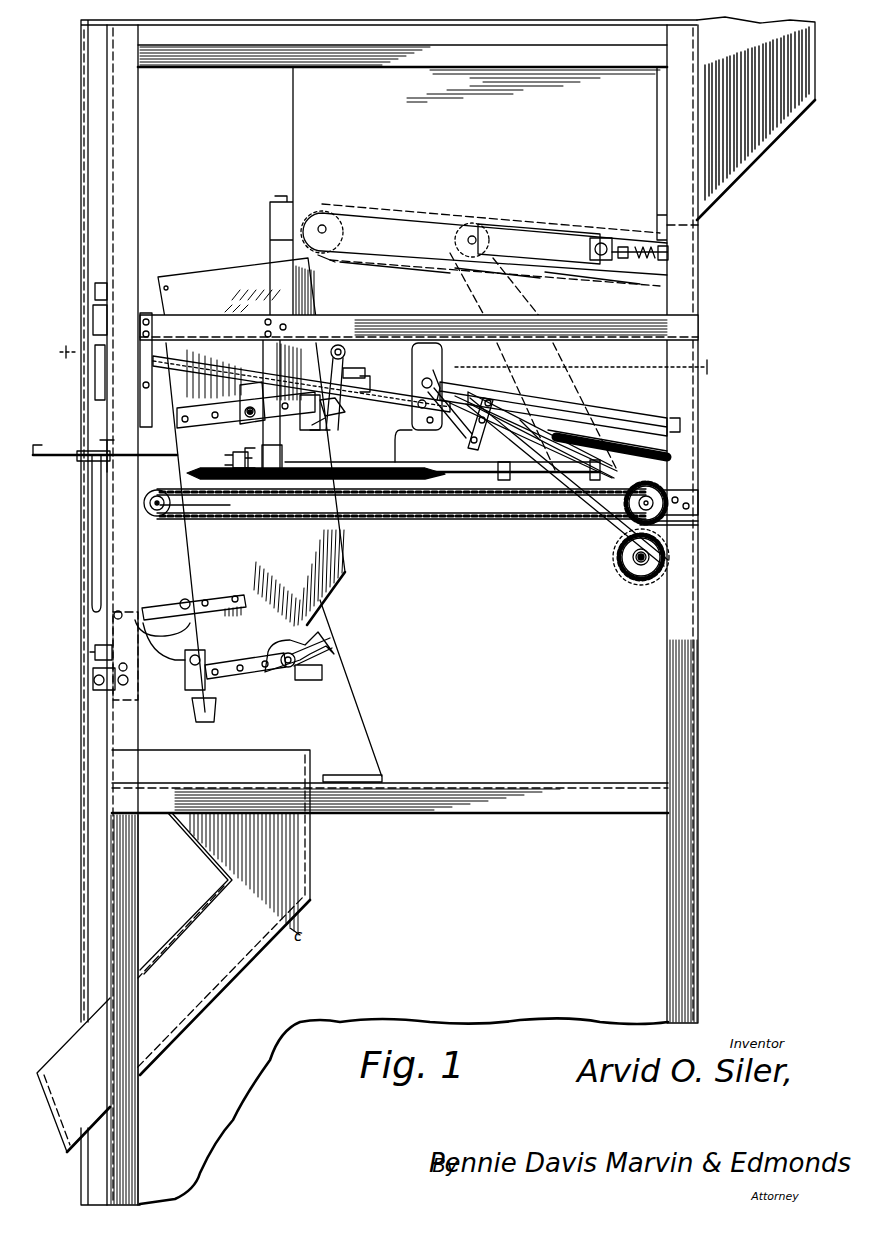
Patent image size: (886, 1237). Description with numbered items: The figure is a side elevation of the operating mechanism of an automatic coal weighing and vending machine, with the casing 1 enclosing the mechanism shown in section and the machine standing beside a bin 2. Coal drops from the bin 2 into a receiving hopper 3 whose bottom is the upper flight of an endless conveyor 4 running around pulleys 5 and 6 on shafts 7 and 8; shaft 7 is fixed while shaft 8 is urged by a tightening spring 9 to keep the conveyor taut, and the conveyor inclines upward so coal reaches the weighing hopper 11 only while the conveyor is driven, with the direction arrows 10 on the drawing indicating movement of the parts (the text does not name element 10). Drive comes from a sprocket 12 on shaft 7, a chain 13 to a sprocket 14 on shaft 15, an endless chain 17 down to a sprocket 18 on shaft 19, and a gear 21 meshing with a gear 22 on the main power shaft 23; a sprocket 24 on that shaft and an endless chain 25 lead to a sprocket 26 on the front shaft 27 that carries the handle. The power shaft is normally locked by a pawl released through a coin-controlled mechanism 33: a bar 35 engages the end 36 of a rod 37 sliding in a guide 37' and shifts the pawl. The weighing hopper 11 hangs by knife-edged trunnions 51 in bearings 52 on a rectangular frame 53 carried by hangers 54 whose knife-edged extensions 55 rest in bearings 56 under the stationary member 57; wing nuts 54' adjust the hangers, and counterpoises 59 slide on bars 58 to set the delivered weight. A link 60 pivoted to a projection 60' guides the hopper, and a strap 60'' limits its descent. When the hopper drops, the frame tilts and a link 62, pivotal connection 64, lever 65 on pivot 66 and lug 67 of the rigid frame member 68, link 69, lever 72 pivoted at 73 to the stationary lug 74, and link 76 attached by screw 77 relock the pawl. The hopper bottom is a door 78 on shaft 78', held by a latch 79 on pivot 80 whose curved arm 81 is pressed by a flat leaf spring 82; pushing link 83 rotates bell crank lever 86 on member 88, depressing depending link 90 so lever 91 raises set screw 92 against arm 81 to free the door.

The casing 1 is at (80, 250).
The bin 2 is at (101, 1195).
The receiving hopper 3 is at (293, 157).
The endless conveyor 4 is at (592, 281).
The pulley 5 is at (355, 212).
The pulley 6 is at (575, 232).
The shaft 7 is at (326, 229).
The shaft 8 is at (601, 243).
The tightening spring 9 is at (645, 260).
The direction of movement 10 is at (355, 648).
The weighing hopper 11 is at (330, 345).
The sprocket 12 is at (328, 268).
The chain 13 is at (395, 272).
The sprocket 14 is at (497, 279).
The shaft 15 is at (476, 240).
The endless chain 17 is at (530, 312).
The sprocket 18 is at (641, 580).
The shaft 19 is at (635, 556).
The gear 21 is at (620, 570).
The gear 22 is at (665, 490).
The main power shaft 23 is at (653, 505).
The sprocket 24 is at (670, 523).
The endless chain 25 is at (447, 520).
The sprocket 26 is at (165, 513).
The shaft 27 is at (185, 503).
The coin-controlled mechanism 33 is at (90, 462).
The bar 35 is at (70, 455).
The end of rod 36 is at (230, 455).
The rod 37 is at (316, 455).
The guide 37' is at (300, 416).
The knife-edged trunnions 51 is at (250, 418).
The bearings 52 is at (220, 418).
The rectangular frame 53 is at (245, 372).
The hangers 54 is at (355, 379).
The wing nuts 54' is at (345, 415).
The knife-edged extensions 55 is at (343, 365).
The bearings 56 is at (345, 352).
The stationary member 57 is at (360, 320).
The bars 58 is at (605, 418).
The counterpoises 59 is at (425, 380).
The link 60 is at (162, 603).
The projection 60' is at (293, 656).
The strap 60'' is at (73, 377).
The link 62 is at (630, 418).
The pivotal connection 64 is at (440, 372).
The lever 65 is at (447, 392).
The pivot 66 is at (398, 446).
The lug 67 is at (442, 451).
The rigid frame member 68 is at (575, 508).
The link 69 is at (488, 398).
The lever 72 is at (500, 430).
The pivotal connection 73 is at (525, 435).
The stationary lug 74 is at (480, 472).
The link 76 is at (535, 412).
The screw 77 is at (335, 432).
The door 78 is at (245, 679).
The shaft 78' is at (306, 671).
The latch 79 is at (205, 710).
The pivot 80 is at (262, 655).
The curved arm 81 is at (150, 660).
The flat leaf spring 82 is at (175, 608).
The link 83 is at (95, 292).
The bell crank lever 86 is at (93, 325).
The member 88 is at (152, 342).
The depending link 90 is at (100, 565).
The lever 91 is at (95, 685).
The adjustable set screw 92 is at (95, 646).